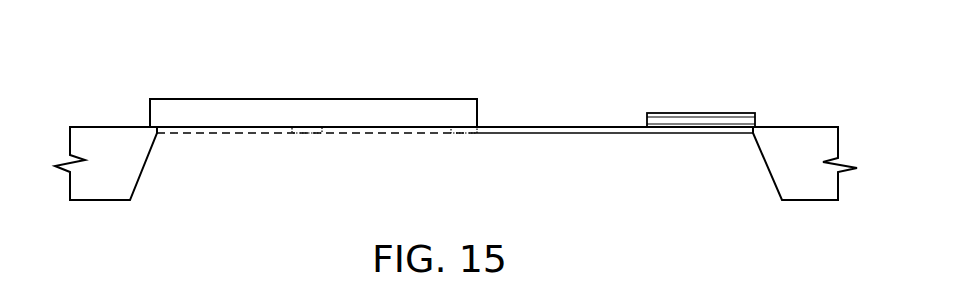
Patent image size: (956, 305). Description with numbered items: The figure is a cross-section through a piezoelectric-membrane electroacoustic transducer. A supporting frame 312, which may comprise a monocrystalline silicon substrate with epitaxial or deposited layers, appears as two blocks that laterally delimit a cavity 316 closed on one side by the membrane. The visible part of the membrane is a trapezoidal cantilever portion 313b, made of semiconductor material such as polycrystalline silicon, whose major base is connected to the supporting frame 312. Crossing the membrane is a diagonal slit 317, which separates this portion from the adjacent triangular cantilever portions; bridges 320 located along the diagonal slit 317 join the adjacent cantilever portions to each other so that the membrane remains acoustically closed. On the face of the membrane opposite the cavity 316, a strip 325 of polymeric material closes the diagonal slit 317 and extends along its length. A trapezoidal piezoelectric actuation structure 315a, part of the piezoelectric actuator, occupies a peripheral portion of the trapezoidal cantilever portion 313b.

The supporting frame 312 is at (107, 140).
The trapezoidal cantilever portion 313b is at (585, 127).
The piezoelectric actuation structure 315a is at (695, 113).
The cavity 316 is at (575, 167).
The diagonal slit 317 is at (240, 134).
The bridge 320 is at (465, 135).
The strip 325 is at (278, 99).